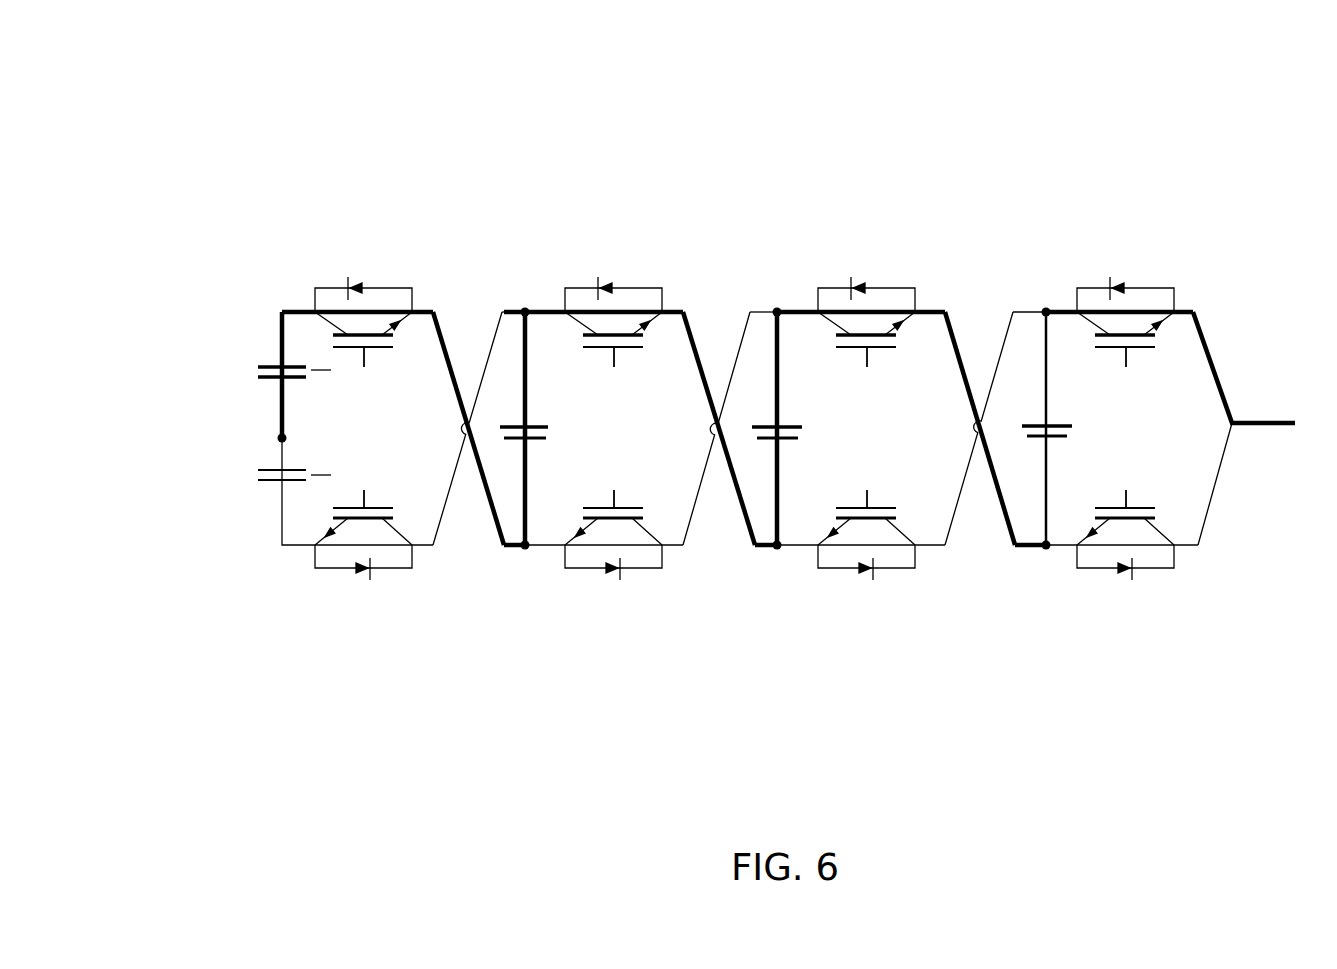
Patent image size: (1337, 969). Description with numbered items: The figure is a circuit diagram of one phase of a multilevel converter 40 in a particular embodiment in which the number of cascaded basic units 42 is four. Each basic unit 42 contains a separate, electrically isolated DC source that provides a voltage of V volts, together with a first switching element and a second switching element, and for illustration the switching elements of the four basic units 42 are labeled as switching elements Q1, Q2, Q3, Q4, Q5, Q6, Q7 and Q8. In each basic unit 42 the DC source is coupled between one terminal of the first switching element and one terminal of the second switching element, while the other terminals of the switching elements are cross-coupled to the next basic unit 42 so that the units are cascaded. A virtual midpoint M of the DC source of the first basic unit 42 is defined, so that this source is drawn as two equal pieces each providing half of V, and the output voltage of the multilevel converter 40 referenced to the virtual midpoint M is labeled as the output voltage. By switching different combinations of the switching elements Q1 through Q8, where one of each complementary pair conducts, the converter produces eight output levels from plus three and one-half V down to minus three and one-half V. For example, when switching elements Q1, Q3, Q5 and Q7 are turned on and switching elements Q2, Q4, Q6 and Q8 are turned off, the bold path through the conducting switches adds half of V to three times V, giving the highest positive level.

The multilevel converter 40 is at (270, 100).
The basic unit 42 is at (783, 492).
The virtual midpoint M is at (264, 439).
The switching element Q1 is at (363, 329).
The switching element Q2 is at (363, 528).
The switching element Q3 is at (613, 328).
The switching element Q4 is at (613, 527).
The switching element Q5 is at (866, 328).
The switching element Q6 is at (866, 527).
The switching element Q7 is at (1125, 327).
The switching element Q8 is at (1125, 524).